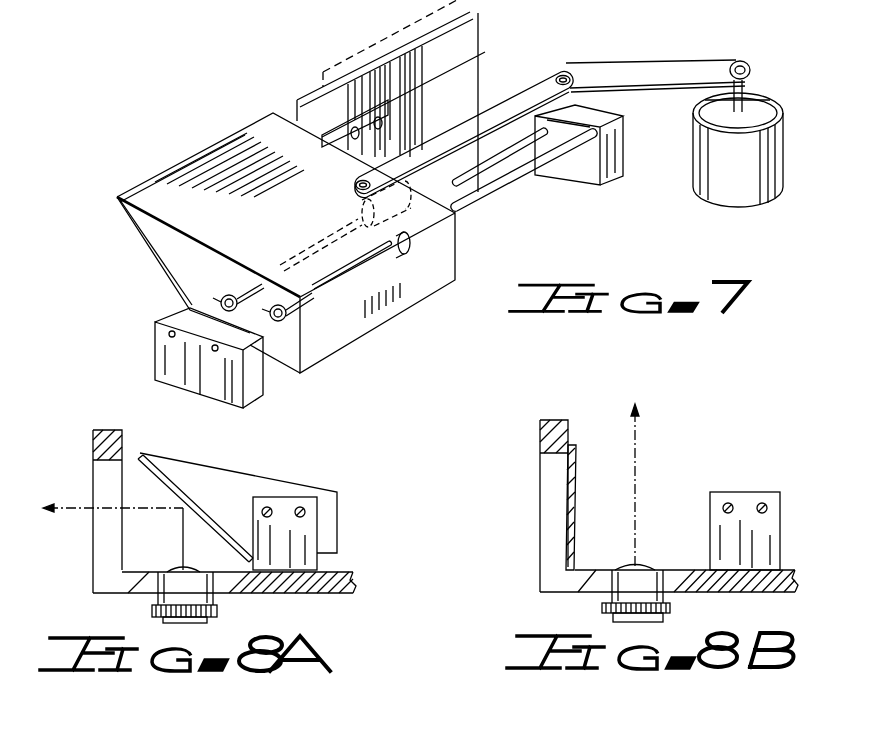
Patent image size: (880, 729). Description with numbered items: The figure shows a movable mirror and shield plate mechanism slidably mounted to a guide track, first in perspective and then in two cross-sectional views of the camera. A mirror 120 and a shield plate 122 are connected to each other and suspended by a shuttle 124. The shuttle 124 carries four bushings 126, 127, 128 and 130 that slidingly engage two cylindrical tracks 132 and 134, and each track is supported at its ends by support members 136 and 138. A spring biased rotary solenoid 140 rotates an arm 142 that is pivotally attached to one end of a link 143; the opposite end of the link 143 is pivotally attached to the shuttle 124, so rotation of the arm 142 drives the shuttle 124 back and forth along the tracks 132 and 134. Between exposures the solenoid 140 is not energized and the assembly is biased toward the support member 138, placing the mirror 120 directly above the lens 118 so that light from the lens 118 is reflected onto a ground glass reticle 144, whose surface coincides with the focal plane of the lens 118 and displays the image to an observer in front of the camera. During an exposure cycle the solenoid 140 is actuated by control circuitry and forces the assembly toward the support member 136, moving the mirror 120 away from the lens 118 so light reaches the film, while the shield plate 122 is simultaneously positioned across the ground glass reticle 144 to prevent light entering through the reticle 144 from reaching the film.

In FIG. 8A, the lens 118 is at (217, 612).
In FIG. 8B, the lens 118 is at (670, 608).
In FIG. 7, the mirror 120 is at (145, 262).
In FIG. 8A, the mirror 120 is at (210, 538).
In FIG. 7, the shield plate 122 is at (468, 30).
In FIG. 8B, the shield plate 122 is at (577, 515).
In FIG. 7, the shuttle 124 is at (370, 320).
In FIG. 8A, the shuttle 124 is at (337, 500).
In FIG. 7, the bushing 126 is at (213, 295).
In FIG. 7, the bushing 127 is at (273, 330).
In FIG. 7, the bushing 128 is at (333, 225).
In FIG. 7, the bushing 130 is at (387, 260).
In FIG. 7, the cylindrical track 132 is at (478, 190).
In FIG. 7, the cylindrical track 134 is at (517, 180).
In FIG. 7, the support member 136 is at (250, 388).
In FIG. 8A, the support member 136 is at (317, 565).
In FIG. 8B, the support member 136 is at (780, 525).
In FIG. 7, the support member 138 is at (613, 152).
In FIG. 7, the spring biased rotary solenoid 140 is at (697, 175).
In FIG. 7, the arm 142 is at (633, 73).
In FIG. 7, the link 143 is at (507, 107).
In FIG. 7, the ground glass reticle 144 is at (371, 56).
In FIG. 8A, the ground glass reticle 144 is at (100, 470).
In FIG. 8B, the ground glass reticle 144 is at (545, 485).